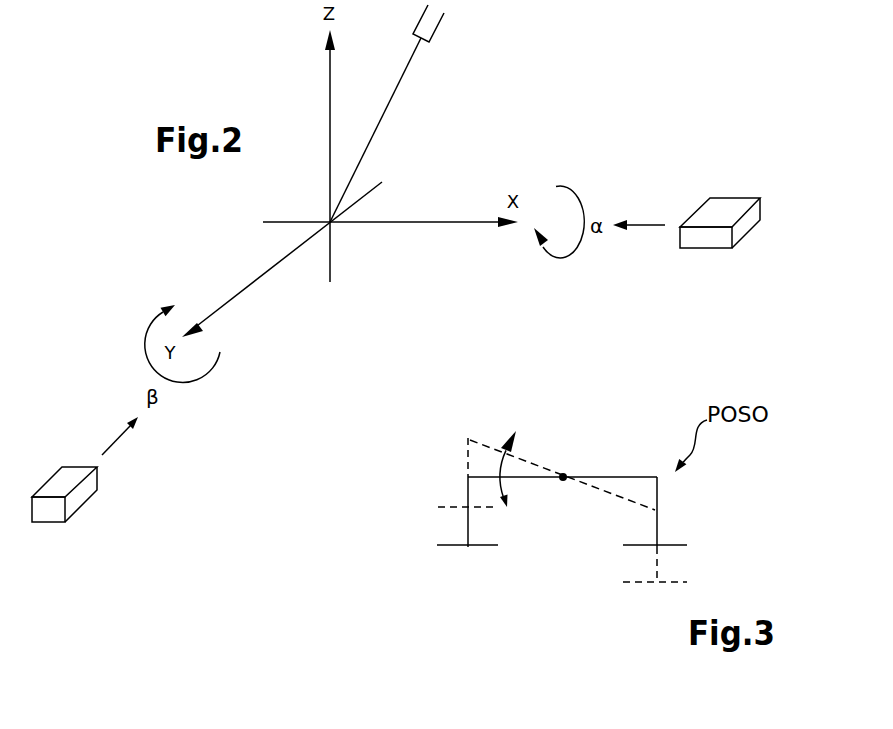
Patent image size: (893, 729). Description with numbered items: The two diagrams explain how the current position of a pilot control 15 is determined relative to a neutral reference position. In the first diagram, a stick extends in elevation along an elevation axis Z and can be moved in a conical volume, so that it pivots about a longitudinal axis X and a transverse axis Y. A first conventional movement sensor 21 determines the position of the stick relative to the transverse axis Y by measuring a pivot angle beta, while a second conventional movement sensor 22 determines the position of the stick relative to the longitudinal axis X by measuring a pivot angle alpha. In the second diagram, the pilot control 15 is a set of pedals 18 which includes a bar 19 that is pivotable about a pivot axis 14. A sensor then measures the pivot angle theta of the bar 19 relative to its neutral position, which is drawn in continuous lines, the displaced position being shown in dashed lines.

In FIG. 3, the pivot axis 14 is at (564, 473).
In FIG. 3, the pilot control 15 is at (512, 586).
In FIG. 3, the set of pedals 18 is at (468, 574).
In FIG. 3, the bar 19 is at (630, 475).
In FIG. 2, the first movement sensor 21 is at (87, 502).
In FIG. 2, the second movement sensor 22 is at (723, 210).